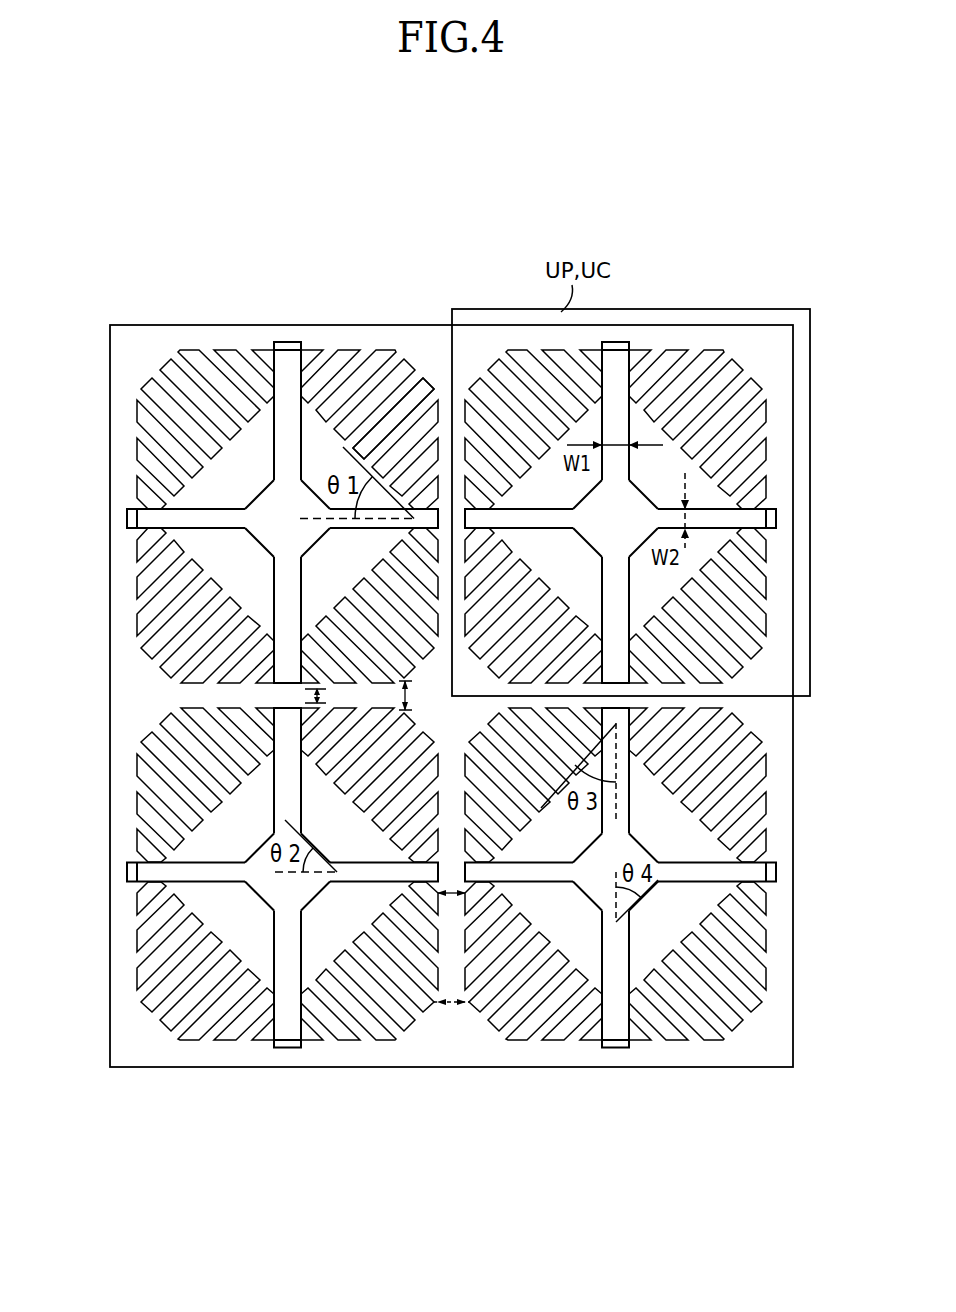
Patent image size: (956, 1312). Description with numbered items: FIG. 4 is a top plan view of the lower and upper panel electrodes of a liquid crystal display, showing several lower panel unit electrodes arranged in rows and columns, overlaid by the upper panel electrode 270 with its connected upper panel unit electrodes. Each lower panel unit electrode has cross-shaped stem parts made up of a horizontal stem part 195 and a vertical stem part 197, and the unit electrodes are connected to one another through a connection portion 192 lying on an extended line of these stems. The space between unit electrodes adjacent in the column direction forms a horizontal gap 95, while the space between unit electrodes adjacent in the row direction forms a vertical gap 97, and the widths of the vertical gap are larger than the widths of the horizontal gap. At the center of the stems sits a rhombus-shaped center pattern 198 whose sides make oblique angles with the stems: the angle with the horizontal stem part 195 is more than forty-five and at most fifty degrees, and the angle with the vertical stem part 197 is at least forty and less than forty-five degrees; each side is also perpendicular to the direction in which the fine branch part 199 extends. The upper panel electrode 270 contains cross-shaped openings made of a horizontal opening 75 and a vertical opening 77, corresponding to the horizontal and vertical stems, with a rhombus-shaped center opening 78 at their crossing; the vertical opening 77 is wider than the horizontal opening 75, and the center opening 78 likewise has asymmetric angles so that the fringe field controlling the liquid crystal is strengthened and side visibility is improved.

The horizontal opening 75 is at (127, 518).
The vertical opening 77 is at (286, 341).
The center opening 78 is at (258, 495).
The horizontal gap 95 is at (158, 692).
The vertical gap 97 is at (470, 1046).
The connection portion 192 is at (262, 693).
The horizontal stem part 195 is at (143, 542).
The vertical stem part 197 is at (308, 352).
The center pattern 198 is at (176, 476).
The fine branch part 199 is at (363, 393).
The upper panel electrode 270 is at (683, 318).